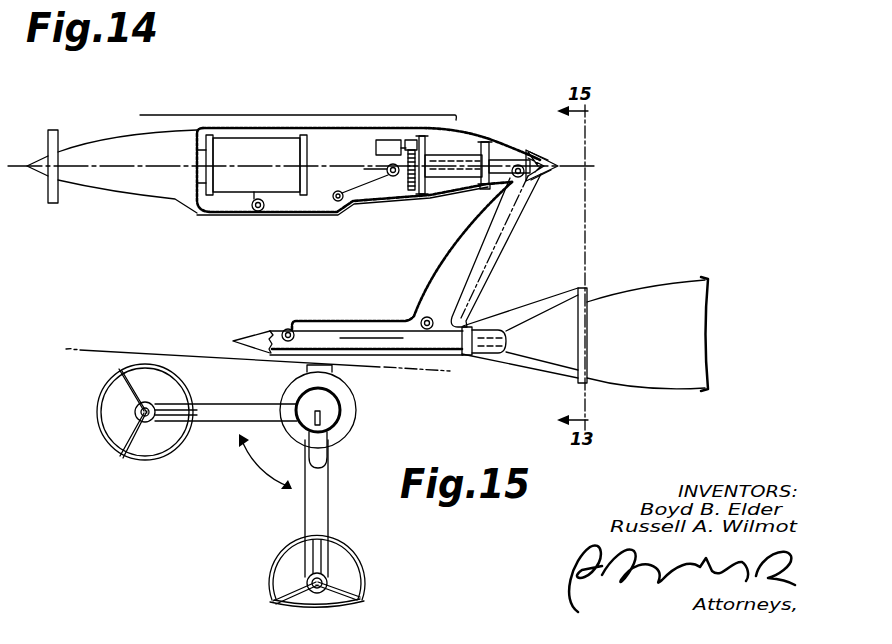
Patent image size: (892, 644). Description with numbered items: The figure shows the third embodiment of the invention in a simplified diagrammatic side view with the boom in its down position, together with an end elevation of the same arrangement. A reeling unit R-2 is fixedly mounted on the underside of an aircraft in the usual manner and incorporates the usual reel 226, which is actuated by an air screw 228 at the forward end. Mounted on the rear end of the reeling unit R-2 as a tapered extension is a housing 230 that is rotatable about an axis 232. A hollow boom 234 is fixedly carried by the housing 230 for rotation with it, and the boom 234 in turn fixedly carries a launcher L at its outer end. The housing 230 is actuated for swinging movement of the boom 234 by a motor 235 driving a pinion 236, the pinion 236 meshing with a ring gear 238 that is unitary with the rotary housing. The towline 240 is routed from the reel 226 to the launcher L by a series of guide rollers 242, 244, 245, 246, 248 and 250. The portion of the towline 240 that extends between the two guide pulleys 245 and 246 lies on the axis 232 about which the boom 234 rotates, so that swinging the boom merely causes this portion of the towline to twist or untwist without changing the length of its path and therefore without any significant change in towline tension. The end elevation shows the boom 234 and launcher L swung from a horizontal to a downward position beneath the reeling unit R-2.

In FIG. 14, the reel 226 is at (233, 150).
In FIG. 14, the air screw 228 is at (60, 149).
In FIG. 14, the housing 230 is at (531, 158).
In FIG. 14, the axis 232 is at (322, 163).
In FIG. 14, the hollow boom 234 is at (500, 245).
In FIG. 15, the hollow boom 234 is at (212, 404).
In FIG. 14, the motor 235 is at (389, 140).
In FIG. 14, the pinion 236 is at (411, 139).
In FIG. 14, the ring gear 238 is at (415, 141).
In FIG. 14, the towline 240 is at (449, 157).
In FIG. 15, the towline 240 is at (340, 402).
In FIG. 14, the guide roller 242 is at (255, 210).
In FIG. 15, the guide roller 242 is at (331, 455).
In FIG. 14, the guide roller 244 is at (341, 192).
In FIG. 14, the guide pulley 245 is at (391, 177).
In FIG. 14, the guide pulley 246 is at (502, 193).
In FIG. 14, the guide roller 248 is at (424, 316).
In FIG. 14, the guide roller 250 is at (290, 327).
In FIG. 14, the reeling unit R-2 is at (133, 130).
In FIG. 15, the reeling unit R-2 is at (357, 417).
In FIG. 14, the launcher L is at (430, 354).
In FIG. 15, the launcher L is at (135, 419).